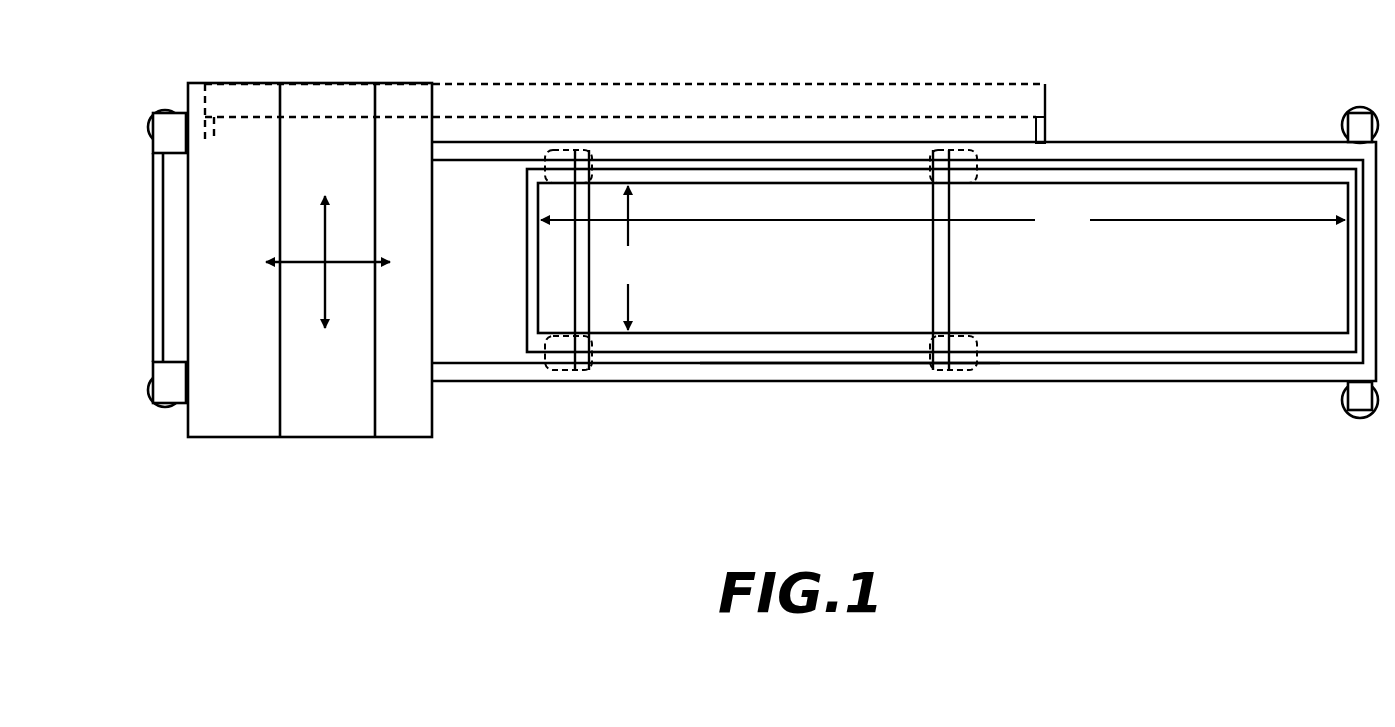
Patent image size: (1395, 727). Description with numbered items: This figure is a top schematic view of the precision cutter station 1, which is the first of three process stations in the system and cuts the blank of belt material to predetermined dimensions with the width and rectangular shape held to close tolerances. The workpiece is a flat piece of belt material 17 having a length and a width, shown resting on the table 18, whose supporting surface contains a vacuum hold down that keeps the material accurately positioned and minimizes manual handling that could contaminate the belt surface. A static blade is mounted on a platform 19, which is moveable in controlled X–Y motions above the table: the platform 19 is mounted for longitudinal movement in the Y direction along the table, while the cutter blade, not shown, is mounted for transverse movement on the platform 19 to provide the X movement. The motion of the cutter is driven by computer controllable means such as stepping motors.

The precision cutter station 1 is at (1126, 103).
The belt material 17 is at (1276, 295).
The table 18 is at (872, 295).
The platform 19 is at (251, 423).